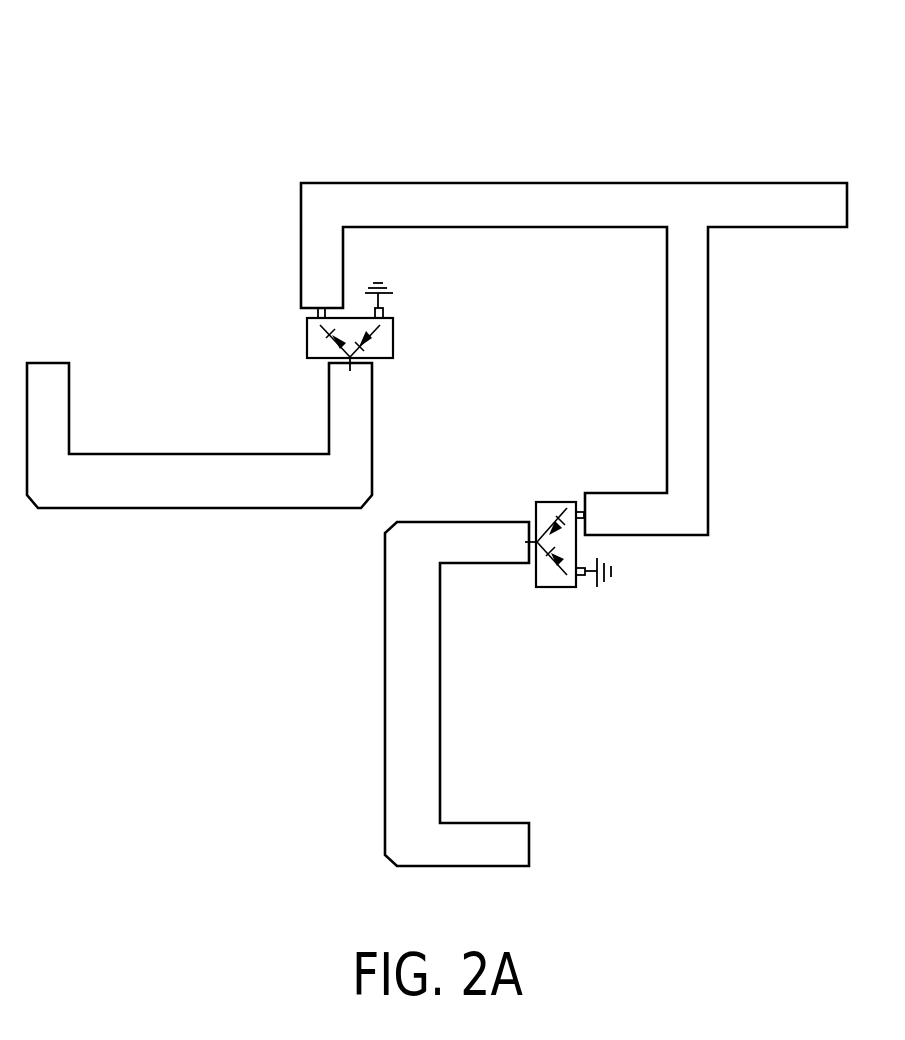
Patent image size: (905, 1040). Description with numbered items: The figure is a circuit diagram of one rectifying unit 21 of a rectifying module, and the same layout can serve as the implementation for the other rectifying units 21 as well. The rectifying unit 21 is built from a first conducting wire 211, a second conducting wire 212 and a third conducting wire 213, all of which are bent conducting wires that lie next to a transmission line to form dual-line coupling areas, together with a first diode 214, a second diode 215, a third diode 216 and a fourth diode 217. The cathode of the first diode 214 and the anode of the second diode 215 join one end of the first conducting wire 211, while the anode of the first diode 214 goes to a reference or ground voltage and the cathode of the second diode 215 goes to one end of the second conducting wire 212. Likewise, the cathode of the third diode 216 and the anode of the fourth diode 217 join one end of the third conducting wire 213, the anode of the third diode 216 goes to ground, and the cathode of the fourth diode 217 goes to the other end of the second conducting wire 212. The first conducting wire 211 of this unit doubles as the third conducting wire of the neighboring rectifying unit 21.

The rectifying unit 21 is at (204, 49).
The first conducting wire 211 is at (530, 202).
The second conducting wire 212 is at (182, 465).
The third conducting wire 213 is at (400, 680).
The first diode 214 is at (365, 333).
The second diode 215 is at (330, 332).
The third diode 216 is at (550, 563).
The fourth diode 217 is at (560, 521).